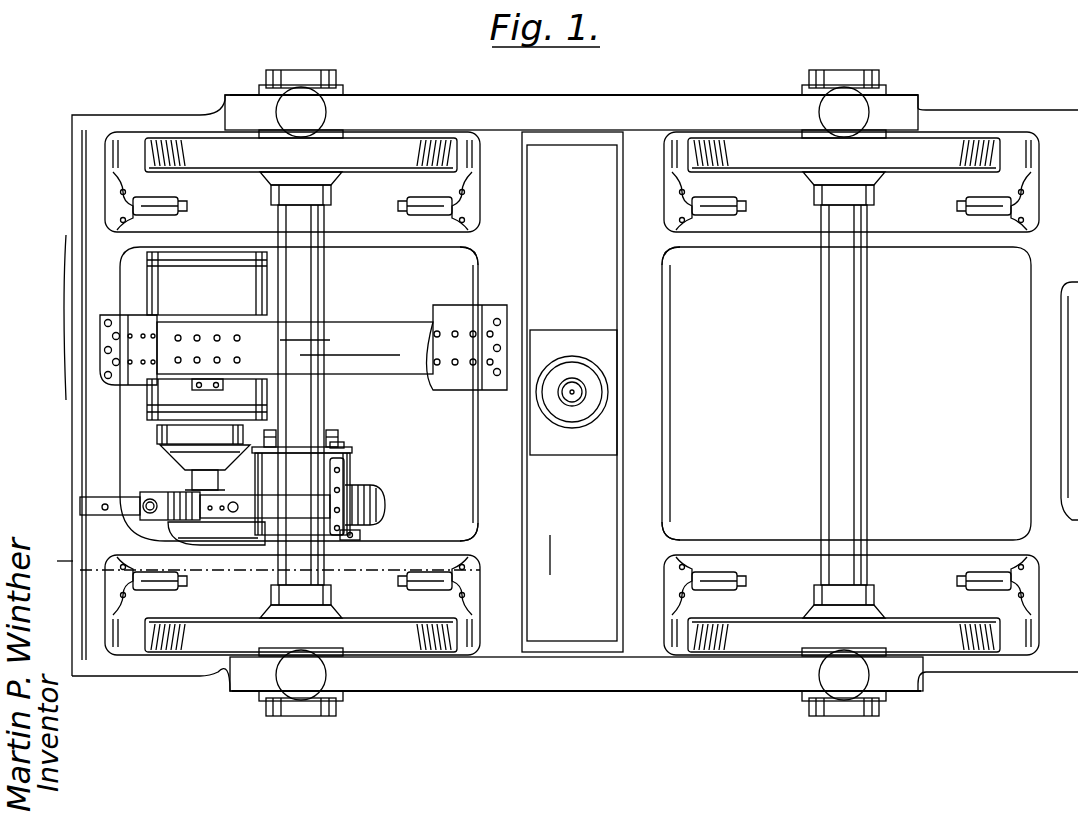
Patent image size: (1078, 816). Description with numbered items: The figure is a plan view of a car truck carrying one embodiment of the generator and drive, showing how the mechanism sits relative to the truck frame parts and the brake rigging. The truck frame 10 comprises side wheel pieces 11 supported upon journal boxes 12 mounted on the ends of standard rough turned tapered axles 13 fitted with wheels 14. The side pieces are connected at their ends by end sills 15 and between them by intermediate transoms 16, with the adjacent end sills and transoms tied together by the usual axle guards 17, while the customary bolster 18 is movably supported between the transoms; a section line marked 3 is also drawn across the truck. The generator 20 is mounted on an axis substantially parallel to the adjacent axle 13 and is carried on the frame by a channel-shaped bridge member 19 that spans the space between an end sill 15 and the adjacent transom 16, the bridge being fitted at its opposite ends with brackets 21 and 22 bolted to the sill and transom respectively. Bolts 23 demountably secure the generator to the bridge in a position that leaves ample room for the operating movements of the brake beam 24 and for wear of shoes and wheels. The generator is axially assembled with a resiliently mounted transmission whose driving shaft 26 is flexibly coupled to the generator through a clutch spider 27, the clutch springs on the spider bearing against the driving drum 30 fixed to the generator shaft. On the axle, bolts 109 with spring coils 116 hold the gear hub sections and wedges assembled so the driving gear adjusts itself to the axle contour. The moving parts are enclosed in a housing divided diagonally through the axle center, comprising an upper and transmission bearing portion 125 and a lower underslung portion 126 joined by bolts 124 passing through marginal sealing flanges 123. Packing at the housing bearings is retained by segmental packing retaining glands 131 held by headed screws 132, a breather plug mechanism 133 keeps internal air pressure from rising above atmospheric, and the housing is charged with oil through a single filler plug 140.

The section line 3- 3 is at (302, 555).
The truck frame 10 is at (126, 115).
The side wheel pieces 11 is at (604, 95).
The journal boxes 12 is at (266, 72).
The axles 13 is at (325, 282).
The wheels 14 is at (395, 172).
The end sills 15 is at (90, 424).
The intermediate transoms 16 is at (472, 442).
The axle guards 17 is at (412, 247).
The bolster 18 is at (565, 628).
The bridge member 19 is at (394, 332).
The generator 20 is at (232, 270).
The bracket 21 is at (100, 322).
The bracket 22 is at (452, 316).
The bolts 23 is at (240, 350).
The brake beam 24 is at (80, 352).
The driving shaft 26 is at (192, 478).
The clutch spider 27 is at (168, 450).
The driving drum 30 is at (158, 436).
The bolts 109 is at (278, 440).
The spring coils 116 is at (338, 437).
The marginal sealing flanges 123 is at (346, 492).
The bolts 124 is at (330, 503).
The upper and transmission bearing portion 125 is at (278, 547).
The lower underslung portion 126 is at (380, 503).
The segmental packing retaining glands 131 is at (352, 450).
The headed screws 132 is at (344, 444).
The breather plug mechanism 133 is at (240, 504).
The filler plug 140 is at (362, 534).